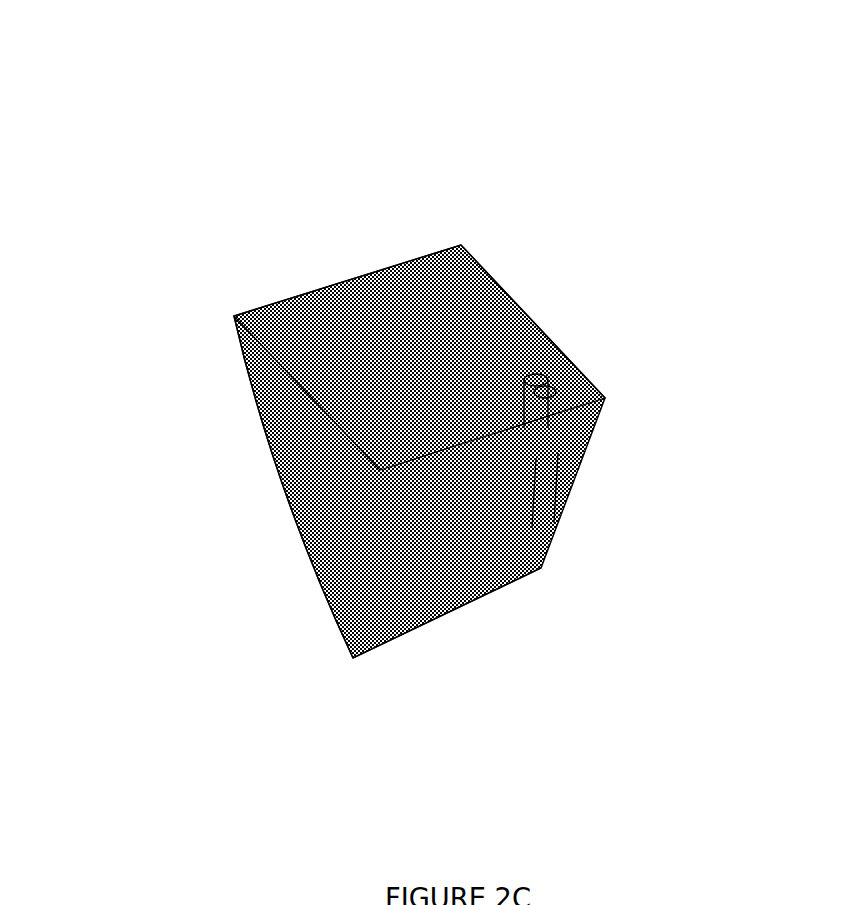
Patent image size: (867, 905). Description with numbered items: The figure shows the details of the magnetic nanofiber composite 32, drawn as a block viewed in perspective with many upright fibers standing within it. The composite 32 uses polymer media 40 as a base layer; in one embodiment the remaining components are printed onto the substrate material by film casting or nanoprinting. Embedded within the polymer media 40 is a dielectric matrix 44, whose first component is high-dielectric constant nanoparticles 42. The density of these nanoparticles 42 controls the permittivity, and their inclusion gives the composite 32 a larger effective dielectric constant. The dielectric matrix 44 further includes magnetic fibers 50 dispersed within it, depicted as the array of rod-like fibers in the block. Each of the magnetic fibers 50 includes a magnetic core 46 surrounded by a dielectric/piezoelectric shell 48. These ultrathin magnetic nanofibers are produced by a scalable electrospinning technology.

The magnetic nanofiber composite 32 is at (667, 100).
The polymer media 40 is at (458, 242).
The high-dielectric constant nanoparticles 42 is at (531, 371).
The dielectric matrix 44 is at (322, 600).
The magnetic core 46 is at (537, 382).
The dielectric/piezoelectric shell 48 is at (538, 467).
The magnetic fibers 50 is at (432, 592).